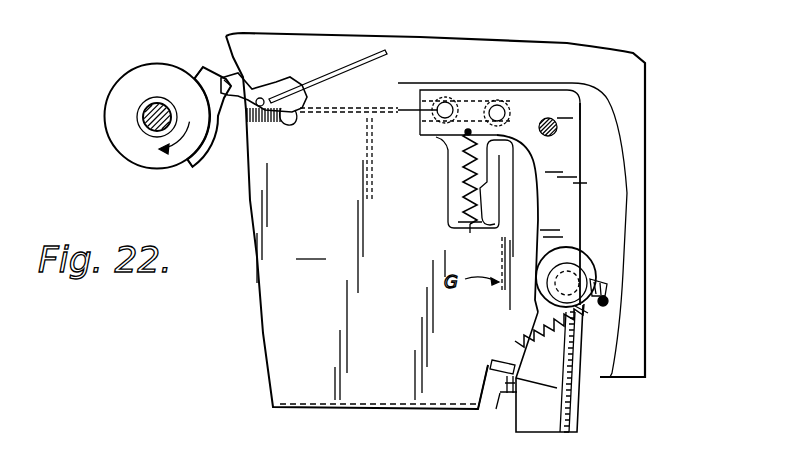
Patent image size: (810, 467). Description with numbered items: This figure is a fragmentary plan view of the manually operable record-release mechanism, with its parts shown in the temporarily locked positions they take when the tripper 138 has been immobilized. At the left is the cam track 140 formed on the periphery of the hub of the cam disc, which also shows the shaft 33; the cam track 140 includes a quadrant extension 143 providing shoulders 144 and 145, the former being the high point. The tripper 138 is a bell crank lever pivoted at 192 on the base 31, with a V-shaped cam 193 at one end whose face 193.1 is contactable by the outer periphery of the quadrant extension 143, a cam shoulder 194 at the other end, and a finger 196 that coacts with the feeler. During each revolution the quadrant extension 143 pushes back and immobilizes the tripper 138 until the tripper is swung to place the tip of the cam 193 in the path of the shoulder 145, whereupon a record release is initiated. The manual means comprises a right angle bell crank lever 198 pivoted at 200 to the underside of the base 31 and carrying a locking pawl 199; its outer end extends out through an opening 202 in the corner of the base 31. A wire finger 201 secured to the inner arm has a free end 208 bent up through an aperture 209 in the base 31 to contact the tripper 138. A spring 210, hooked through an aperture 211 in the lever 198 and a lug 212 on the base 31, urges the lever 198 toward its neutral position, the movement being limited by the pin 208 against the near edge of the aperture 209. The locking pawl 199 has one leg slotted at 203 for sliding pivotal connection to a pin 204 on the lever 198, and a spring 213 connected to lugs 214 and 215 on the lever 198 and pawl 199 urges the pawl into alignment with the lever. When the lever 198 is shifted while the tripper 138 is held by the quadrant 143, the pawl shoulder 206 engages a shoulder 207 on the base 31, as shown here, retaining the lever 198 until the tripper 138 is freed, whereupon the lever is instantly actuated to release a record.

The cam track 140 is at (112, 88).
The drive shaft 33 is at (142, 127).
The quadrant extension 143 is at (212, 150).
The shoulder 144 is at (207, 86).
The face of the cam 193.1 is at (197, 88).
The shoulder 145 is at (196, 158).
The V-shaped cam 193 is at (221, 36).
The base 31 is at (368, 222).
The tripper 138 is at (250, 86).
The pivot 192 is at (254, 122).
The cam shoulder 194 is at (300, 79).
The finger 196 is at (348, 71).
The free end of the wire 208 is at (299, 121).
The aperture 209 is at (289, 121).
The finger 201 is at (420, 128).
The aperture 211 is at (470, 130).
The pivot 200 is at (556, 121).
The spring 210 is at (466, 172).
The lug 212 is at (462, 224).
The bell crank lever 198 is at (577, 390).
The locking pawl 199 is at (558, 418).
The slot 203 is at (563, 262).
The pin 204 is at (572, 283).
The lug 214 is at (610, 297).
The spring 213 is at (585, 313).
The lug 215 is at (517, 343).
The shoulder 207 is at (500, 364).
The shoulder 206 is at (510, 382).
The opening 202 is at (493, 390).